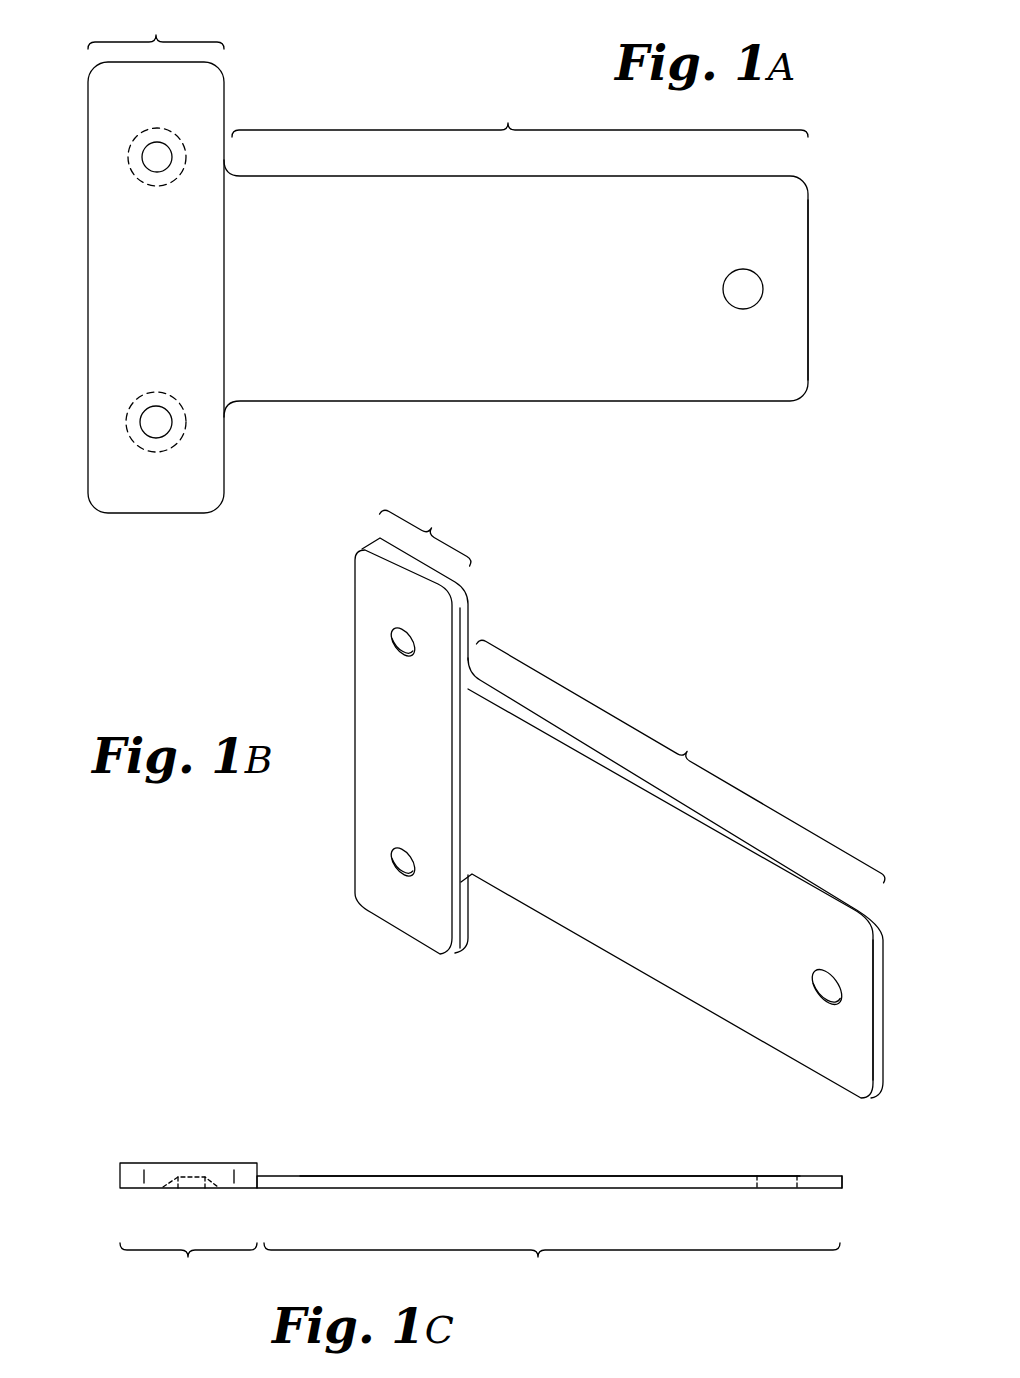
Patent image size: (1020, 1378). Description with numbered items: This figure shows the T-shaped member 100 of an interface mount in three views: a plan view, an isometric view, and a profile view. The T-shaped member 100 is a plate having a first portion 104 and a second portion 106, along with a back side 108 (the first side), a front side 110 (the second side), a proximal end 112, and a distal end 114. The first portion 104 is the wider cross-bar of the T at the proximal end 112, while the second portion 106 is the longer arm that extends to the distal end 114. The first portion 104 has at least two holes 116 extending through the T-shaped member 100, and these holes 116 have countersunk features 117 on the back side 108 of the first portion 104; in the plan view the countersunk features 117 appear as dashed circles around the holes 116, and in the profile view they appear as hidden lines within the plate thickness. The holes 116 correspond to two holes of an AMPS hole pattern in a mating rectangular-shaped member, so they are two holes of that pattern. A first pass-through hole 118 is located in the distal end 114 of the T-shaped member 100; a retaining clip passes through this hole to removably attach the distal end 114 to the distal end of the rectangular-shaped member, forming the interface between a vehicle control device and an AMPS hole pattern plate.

In FIG. 1A, the T-shaped member 100 is at (888, 149).
In FIG. 1B, the T-shaped member 100 is at (829, 714).
In FIG. 1C, the T-shaped member 100 is at (128, 1082).
In FIG. 1A, the first portion 104 is at (156, 28).
In FIG. 1B, the first portion 104 is at (428, 532).
In FIG. 1C, the first portion 104 is at (188, 1265).
In FIG. 1A, the second portion 106 is at (520, 117).
In FIG. 1B, the second portion 106 is at (683, 757).
In FIG. 1C, the second portion 106 is at (552, 1265).
In FIG. 1C, the back side 108 is at (434, 1189).
In FIG. 1A, the front side 110 is at (578, 363).
In FIG. 1B, the front side 110 is at (663, 927).
In FIG. 1C, the front side 110 is at (400, 1176).
In FIG. 1A, the proximal end 112 is at (88, 479).
In FIG. 1B, the proximal end 112 is at (355, 782).
In FIG. 1C, the proximal end 112 is at (120, 1173).
In FIG. 1A, the distal end 114 is at (812, 362).
In FIG. 1B, the distal end 114 is at (876, 1056).
In FIG. 1C, the distal end 114 is at (845, 1183).
In FIG. 1A, the holes 116 is at (157, 163).
In FIG. 1B, the holes 116 is at (396, 648).
In FIG. 1C, the holes 116 is at (192, 1170).
In FIG. 1A, the countersunk features 117 is at (131, 144).
In FIG. 1C, the countersunk features 117 is at (172, 1188).
In FIG. 1A, the first pass-through hole 118 is at (763, 292).
In FIG. 1B, the first pass-through hole 118 is at (843, 985).
In FIG. 1C, the first pass-through hole 118 is at (775, 1176).